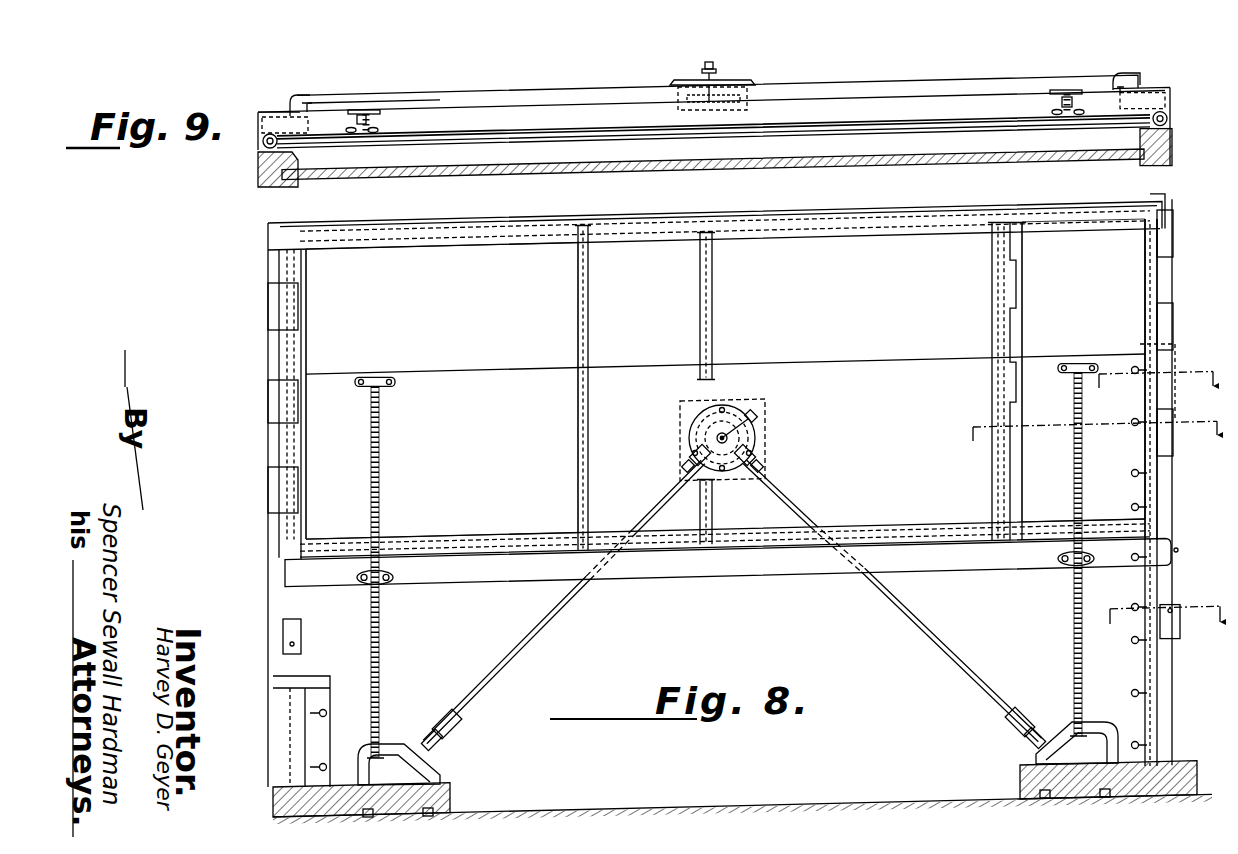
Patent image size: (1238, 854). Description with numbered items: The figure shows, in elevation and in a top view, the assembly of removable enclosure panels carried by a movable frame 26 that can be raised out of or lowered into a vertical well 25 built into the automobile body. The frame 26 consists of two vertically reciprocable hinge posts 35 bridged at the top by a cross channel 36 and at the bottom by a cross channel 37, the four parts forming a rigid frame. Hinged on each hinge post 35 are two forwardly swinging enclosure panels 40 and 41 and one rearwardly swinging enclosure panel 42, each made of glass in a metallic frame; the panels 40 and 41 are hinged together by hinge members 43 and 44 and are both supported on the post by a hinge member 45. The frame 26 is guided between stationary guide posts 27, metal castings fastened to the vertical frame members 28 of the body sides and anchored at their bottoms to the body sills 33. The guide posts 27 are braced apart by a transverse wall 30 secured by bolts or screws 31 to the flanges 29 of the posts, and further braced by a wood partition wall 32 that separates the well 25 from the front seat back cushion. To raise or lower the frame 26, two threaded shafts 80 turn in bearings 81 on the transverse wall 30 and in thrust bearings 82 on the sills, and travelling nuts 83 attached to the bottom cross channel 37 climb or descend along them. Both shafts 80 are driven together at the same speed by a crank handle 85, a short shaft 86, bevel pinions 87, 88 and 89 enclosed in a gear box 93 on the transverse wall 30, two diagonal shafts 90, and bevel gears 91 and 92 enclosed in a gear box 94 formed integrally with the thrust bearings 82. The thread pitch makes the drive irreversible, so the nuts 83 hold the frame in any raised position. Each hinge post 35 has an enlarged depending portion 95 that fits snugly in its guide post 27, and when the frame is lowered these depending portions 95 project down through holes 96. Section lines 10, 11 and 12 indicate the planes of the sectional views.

In FIG. 8, the section line 10- 10 is at (1094, 444).
In FIG. 8, the section line 11- 11 is at (1159, 390).
In FIG. 8, the section line 12- 12 is at (1165, 628).
In FIG. 9, the well 25 is at (885, 104).
In FIG. 8, the movable frame 26 is at (1140, 203).
In FIG. 9, the guide post 27 is at (258, 130).
In FIG. 8, the guide post 27 is at (290, 712).
In FIG. 9, the vertical frame member 28 is at (260, 178).
In FIG. 9, the flange 29 is at (290, 108).
In FIG. 9, the transverse wall 30 is at (1000, 86).
In FIG. 8, the transverse wall 30 is at (838, 364).
In FIG. 9, the bolt or screw 31 is at (310, 104).
In FIG. 8, the bolt or screw 31 is at (1132, 423).
In FIG. 9, the partition wall 32 is at (1043, 154).
In FIG. 8, the body sill 33 is at (340, 805).
In FIG. 9, the hinge post 35 is at (264, 145).
In FIG. 8, the hinge post 35 is at (270, 270).
In FIG. 9, the cross channel 36 is at (935, 122).
In FIG. 8, the cross channel 36 is at (758, 212).
In FIG. 8, the cross channel 37 is at (752, 571).
In FIG. 8, the enclosure panel 40 is at (1083, 370).
In FIG. 8, the enclosure panel 41 is at (803, 388).
In FIG. 8, the enclosure panel 42 is at (442, 391).
In FIG. 8, the hinge member 43 is at (1022, 322).
In FIG. 8, the hinge member 44 is at (998, 322).
In FIG. 8, the hinge member 45 is at (1146, 298).
In FIG. 9, the threaded shaft 80 is at (372, 122).
In FIG. 8, the threaded shaft 80 is at (380, 633).
In FIG. 9, the bearing 81 is at (375, 110).
In FIG. 8, the bearing 81 is at (388, 387).
In FIG. 8, the thrust bearing 82 is at (398, 780).
In FIG. 9, the travelling nut 83 is at (357, 124).
In FIG. 8, the travelling nut 83 is at (394, 577).
In FIG. 9, the crank handle 85 is at (714, 70).
In FIG. 8, the crank handle 85 is at (760, 412).
In FIG. 9, the short shaft 86 is at (704, 66).
In FIG. 9, the bevel pinion 87 is at (740, 95).
In FIG. 8, the bevel pinion 87 is at (700, 424).
In FIG. 8, the bevel pinion 88 is at (752, 451).
In FIG. 8, the bevel pinion 89 is at (690, 452).
In FIG. 8, the diagonal shaft 90 is at (556, 621).
In FIG. 8, the bevel gear 91 is at (430, 782).
In FIG. 8, the bevel gear 92 is at (365, 752).
In FIG. 9, the gear box 93 is at (742, 106).
In FIG. 8, the gear box 93 is at (736, 410).
In FIG. 8, the gear box 94 is at (400, 740).
In FIG. 8, the depending portion 95 is at (300, 630).
In FIG. 8, the hole 96 is at (280, 802).